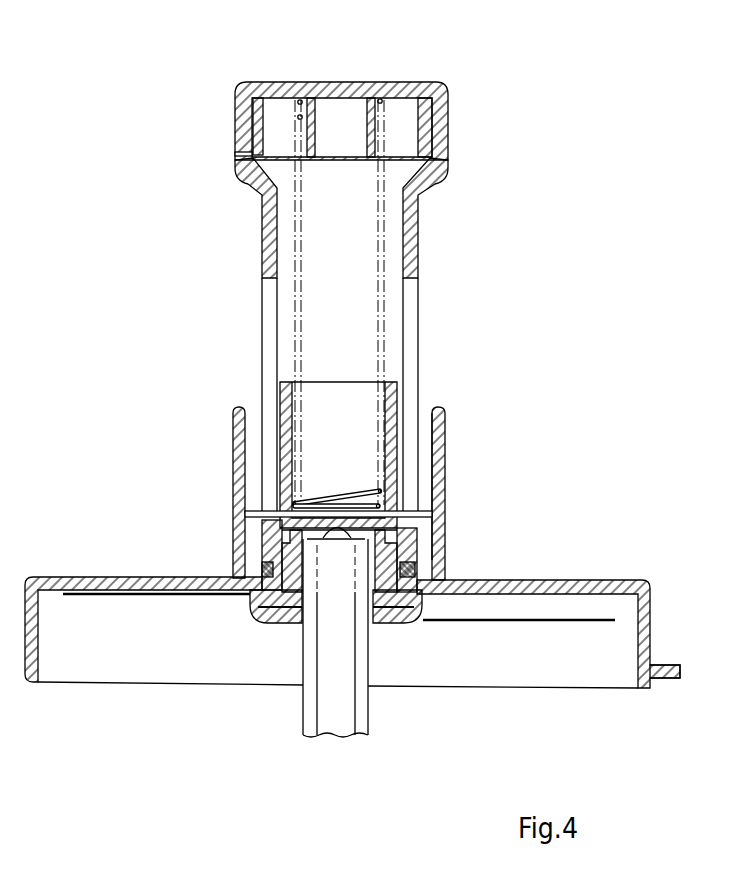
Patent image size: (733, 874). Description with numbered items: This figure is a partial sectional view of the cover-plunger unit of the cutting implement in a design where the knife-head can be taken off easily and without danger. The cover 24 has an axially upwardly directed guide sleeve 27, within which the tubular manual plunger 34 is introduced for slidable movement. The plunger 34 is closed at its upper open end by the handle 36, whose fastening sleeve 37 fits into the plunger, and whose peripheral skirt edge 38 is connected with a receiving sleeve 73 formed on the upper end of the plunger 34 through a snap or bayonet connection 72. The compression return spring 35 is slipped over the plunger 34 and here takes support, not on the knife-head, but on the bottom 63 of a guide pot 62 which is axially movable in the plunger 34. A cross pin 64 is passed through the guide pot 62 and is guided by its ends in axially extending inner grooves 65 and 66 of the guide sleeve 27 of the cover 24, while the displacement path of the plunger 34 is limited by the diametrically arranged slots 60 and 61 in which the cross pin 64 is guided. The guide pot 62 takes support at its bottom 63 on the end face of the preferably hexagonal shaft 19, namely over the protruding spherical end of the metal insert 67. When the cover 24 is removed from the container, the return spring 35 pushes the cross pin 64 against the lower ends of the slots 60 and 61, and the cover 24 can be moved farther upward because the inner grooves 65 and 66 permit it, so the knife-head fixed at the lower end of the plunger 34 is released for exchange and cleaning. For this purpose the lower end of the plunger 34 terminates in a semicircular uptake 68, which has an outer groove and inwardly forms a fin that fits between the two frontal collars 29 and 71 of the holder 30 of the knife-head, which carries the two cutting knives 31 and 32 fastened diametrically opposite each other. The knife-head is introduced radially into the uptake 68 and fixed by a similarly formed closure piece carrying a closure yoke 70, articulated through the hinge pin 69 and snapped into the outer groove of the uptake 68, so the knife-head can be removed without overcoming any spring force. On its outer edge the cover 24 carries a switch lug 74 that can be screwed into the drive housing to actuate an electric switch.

The shaft 19 is at (345, 712).
The cover 24 is at (92, 575).
The guide sleeve 27 is at (440, 467).
The collar 29 is at (250, 622).
The holder 30 is at (400, 616).
The cutting knife 31 is at (138, 592).
The cutting knife 32 is at (535, 621).
The plunger 34 is at (408, 246).
The return spring 35 is at (295, 244).
The handle 36 is at (403, 83).
The fastening sleeve 37 is at (313, 120).
The skirt edge 38 is at (438, 134).
The slot 60 is at (270, 328).
The slot 61 is at (408, 318).
The guide pot 62 is at (393, 395).
The bottom 63 is at (361, 504).
The cross pin 64 is at (297, 503).
The inner groove 65 is at (250, 470).
The inner groove 66 is at (431, 437).
The metal insert 67 is at (337, 532).
The uptake 68 is at (268, 553).
The hinge pin 69 is at (397, 552).
The closure yoke 70 is at (410, 568).
The collar 71 is at (400, 538).
The snap or bayonet connection 72 is at (257, 148).
The receiving sleeve 73 is at (263, 114).
The switch lug 74 is at (665, 672).